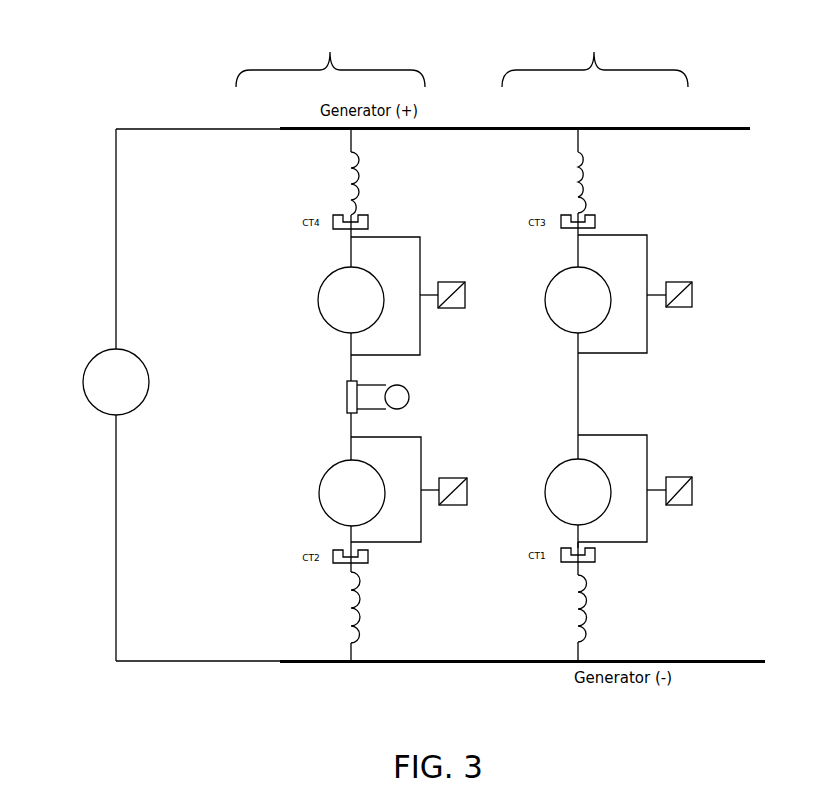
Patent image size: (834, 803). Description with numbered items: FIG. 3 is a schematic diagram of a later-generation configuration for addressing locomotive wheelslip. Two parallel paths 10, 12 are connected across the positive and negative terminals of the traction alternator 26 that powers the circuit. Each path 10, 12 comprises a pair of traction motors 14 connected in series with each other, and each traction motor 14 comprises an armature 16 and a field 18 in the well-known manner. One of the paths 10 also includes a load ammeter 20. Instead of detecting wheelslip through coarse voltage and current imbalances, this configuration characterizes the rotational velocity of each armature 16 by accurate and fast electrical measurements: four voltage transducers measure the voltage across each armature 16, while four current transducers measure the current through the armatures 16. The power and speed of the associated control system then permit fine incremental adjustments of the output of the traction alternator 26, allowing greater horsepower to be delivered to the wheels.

The first parallel path 10 is at (330, 343).
The second parallel path 12 is at (595, 343).
The traction motor 14 is at (282, 244).
The armature 16 is at (322, 316).
The field 18 is at (338, 174).
The load ammeter 20 is at (378, 394).
The traction alternator 26 is at (106, 404).